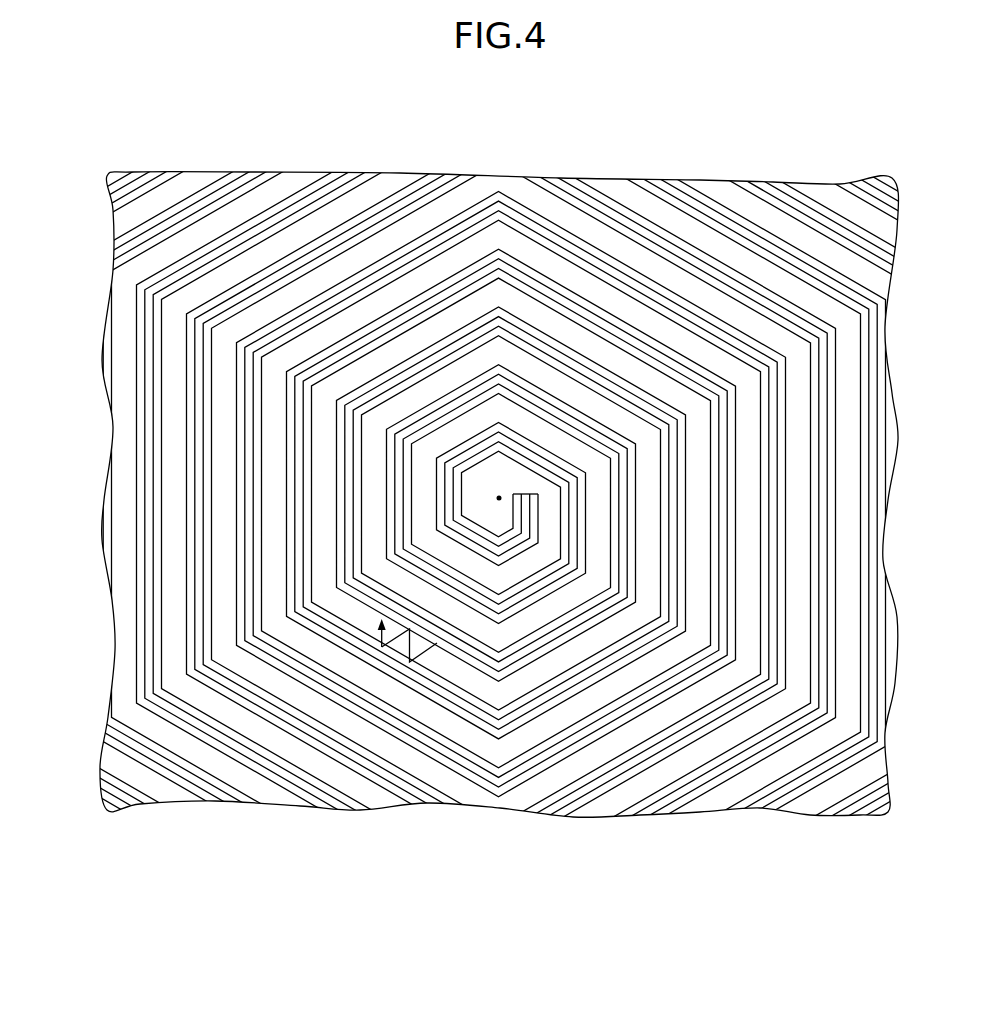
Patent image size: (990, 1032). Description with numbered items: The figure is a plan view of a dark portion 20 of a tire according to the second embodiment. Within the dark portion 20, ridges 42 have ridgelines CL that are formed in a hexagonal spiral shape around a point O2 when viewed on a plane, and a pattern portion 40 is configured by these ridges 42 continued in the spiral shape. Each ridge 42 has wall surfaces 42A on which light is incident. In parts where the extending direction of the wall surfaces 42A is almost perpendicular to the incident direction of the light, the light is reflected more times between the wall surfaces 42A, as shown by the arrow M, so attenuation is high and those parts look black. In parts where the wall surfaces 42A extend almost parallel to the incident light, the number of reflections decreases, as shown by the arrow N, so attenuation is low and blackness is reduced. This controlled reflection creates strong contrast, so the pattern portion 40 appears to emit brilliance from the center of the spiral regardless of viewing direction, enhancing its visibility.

The dark portion 20 is at (903, 135).
The pattern portion 40 is at (483, 733).
The ridges 42 is at (494, 516).
The wall surfaces 42A is at (495, 313).
The point O2 is at (499, 498).
The ridgelines CL is at (673, 360).
The arrow M is at (437, 643).
The arrow N is at (452, 308).